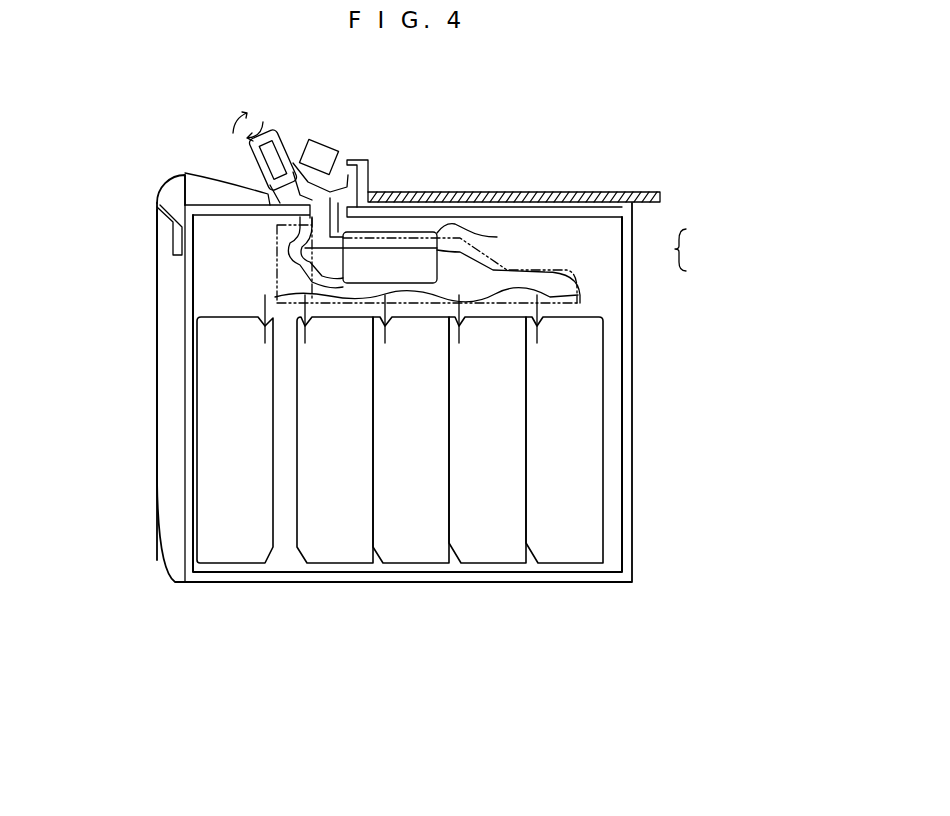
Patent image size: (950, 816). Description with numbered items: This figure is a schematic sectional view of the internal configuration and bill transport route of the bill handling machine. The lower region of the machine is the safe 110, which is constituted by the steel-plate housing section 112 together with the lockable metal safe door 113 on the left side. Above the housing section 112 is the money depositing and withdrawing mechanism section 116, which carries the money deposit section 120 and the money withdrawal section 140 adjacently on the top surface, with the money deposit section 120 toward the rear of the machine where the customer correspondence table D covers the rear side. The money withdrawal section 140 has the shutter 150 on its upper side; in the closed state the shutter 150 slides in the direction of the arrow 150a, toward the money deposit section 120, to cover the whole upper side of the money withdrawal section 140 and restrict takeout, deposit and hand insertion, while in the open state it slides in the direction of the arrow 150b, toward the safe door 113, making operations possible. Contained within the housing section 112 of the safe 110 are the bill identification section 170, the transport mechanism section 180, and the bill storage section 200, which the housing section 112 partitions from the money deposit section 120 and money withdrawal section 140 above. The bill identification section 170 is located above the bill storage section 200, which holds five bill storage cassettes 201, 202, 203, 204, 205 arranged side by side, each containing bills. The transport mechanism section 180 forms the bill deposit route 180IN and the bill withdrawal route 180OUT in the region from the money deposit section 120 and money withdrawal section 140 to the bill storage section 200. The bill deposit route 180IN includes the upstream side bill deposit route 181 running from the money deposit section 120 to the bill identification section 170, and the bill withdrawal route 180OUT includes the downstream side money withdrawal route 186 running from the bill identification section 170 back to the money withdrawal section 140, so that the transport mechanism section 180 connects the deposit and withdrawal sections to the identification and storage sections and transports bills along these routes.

The safe 110 is at (632, 428).
The housing section 112 is at (384, 208).
The safe door 113 is at (172, 414).
The money depositing and withdrawing mechanism section 116 is at (187, 177).
The money deposit section 120 is at (360, 158).
The money withdrawal section 140 is at (193, 180).
The shutter 150 is at (287, 133).
The arrow 150a is at (268, 111).
The arrow 150b is at (262, 163).
The bill identification section 170 is at (497, 237).
The transport mechanism section 180 is at (578, 303).
The bill deposit route 180IN is at (535, 272).
The bill withdrawal route 180OUT is at (616, 274).
The upstream side bill deposit route 181 is at (305, 201).
The downstream side money withdrawal route 186 is at (277, 253).
The bill storage section 200 is at (394, 525).
The bill storage cassette 201 is at (564, 492).
The bill storage cassette 202 is at (503, 540).
The bill storage cassette 203 is at (428, 540).
The bill storage cassette 204 is at (348, 540).
The bill storage cassette 205 is at (252, 540).
The customer correspondence table D is at (473, 192).